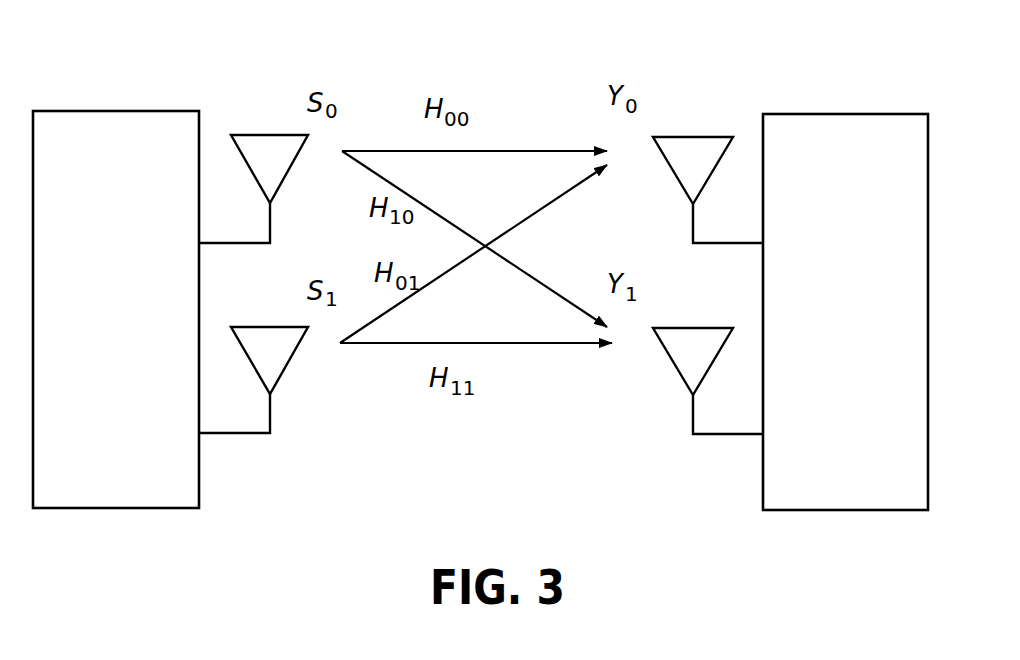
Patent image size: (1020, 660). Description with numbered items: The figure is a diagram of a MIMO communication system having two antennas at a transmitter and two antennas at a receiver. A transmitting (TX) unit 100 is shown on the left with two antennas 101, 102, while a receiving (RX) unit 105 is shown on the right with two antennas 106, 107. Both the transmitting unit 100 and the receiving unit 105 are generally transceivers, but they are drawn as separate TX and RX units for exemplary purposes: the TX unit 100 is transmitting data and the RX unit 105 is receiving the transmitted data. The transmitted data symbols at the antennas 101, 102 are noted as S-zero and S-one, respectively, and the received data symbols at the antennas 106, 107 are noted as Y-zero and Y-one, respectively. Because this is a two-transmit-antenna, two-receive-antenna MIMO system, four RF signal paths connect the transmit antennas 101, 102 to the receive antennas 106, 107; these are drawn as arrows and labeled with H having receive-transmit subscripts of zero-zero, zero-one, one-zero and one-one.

The transmitting unit 100 is at (98, 111).
The antenna 101 is at (247, 135).
The antenna 102 is at (287, 368).
The receiving unit 105 is at (842, 114).
The antenna 106 is at (684, 137).
The antenna 107 is at (673, 370).